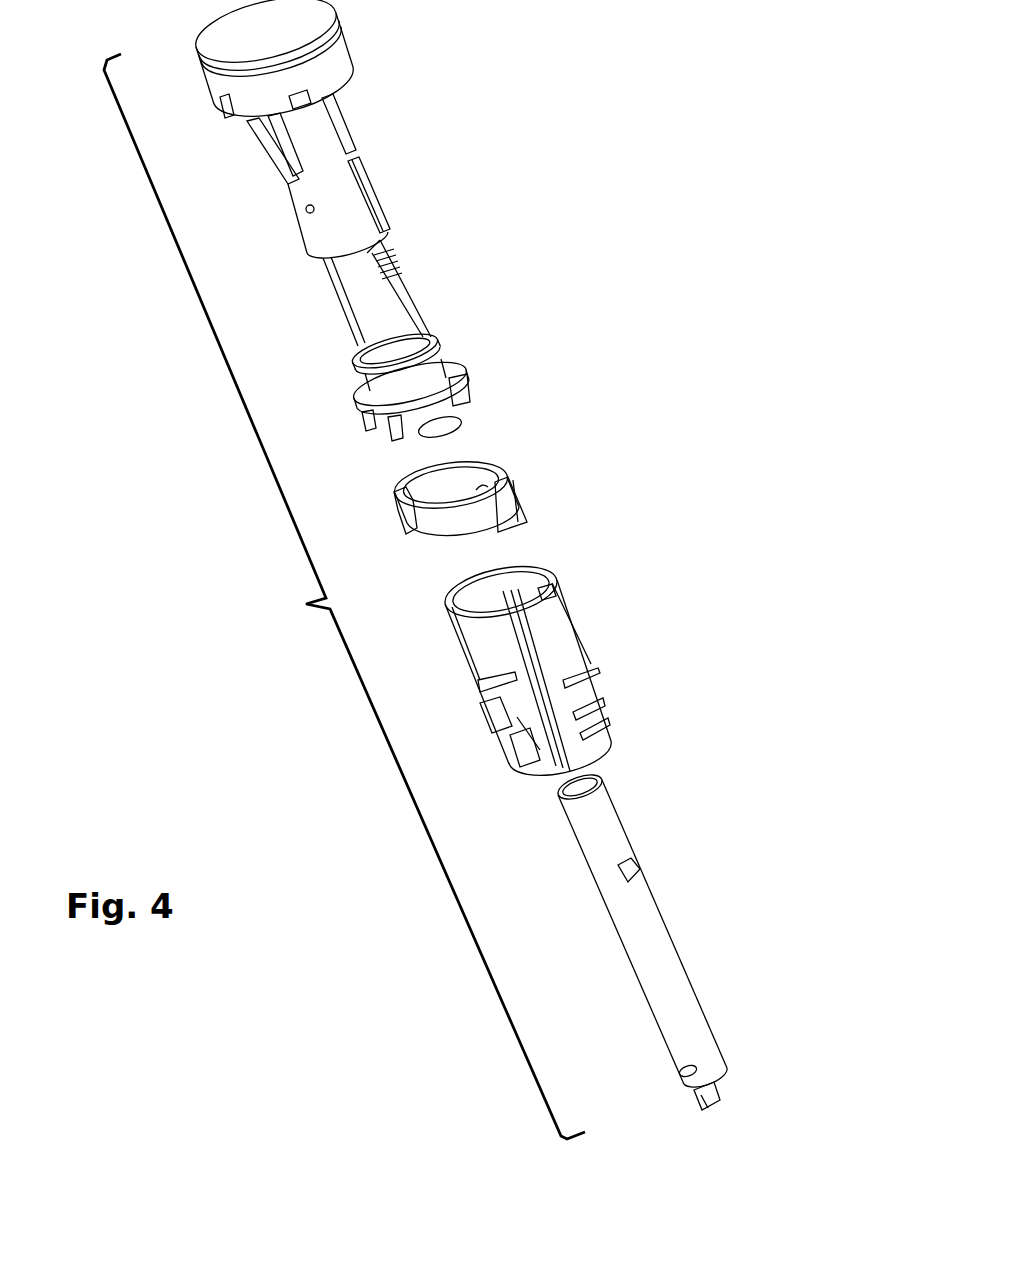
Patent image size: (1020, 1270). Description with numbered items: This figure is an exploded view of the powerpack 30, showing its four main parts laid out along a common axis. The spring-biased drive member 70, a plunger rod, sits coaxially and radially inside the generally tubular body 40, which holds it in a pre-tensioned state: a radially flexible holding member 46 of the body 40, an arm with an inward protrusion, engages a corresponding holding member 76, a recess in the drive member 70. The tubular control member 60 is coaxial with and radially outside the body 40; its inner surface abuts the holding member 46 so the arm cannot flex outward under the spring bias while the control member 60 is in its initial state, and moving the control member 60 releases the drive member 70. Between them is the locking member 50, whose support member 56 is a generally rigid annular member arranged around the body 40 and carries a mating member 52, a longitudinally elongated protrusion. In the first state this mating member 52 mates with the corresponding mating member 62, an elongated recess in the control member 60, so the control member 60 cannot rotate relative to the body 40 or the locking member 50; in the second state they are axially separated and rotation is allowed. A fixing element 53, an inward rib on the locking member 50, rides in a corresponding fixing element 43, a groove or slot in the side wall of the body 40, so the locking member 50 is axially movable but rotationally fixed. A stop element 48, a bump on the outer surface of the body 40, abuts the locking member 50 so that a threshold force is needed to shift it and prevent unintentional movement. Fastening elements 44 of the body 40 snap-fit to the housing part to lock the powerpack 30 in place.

The powerpack 30 is at (344, 596).
The body 40 is at (381, 220).
The fixing element 43 is at (372, 203).
The fastening element 44 is at (302, 103).
The holding member 46 is at (403, 295).
The stop element 48 is at (303, 208).
The locking member 50 is at (500, 460).
The mating member 52 is at (510, 504).
The fixing element 53 is at (483, 484).
The support member 56 is at (432, 522).
The control member 60 is at (576, 667).
The mating member 62 is at (540, 593).
The spring-biased drive member 70 is at (680, 940).
The holding member 76 is at (628, 869).